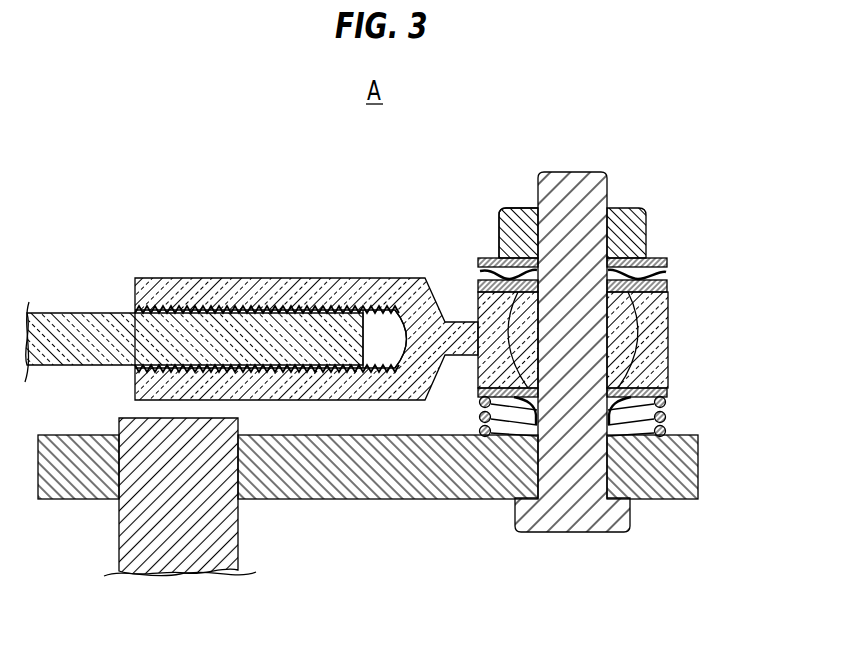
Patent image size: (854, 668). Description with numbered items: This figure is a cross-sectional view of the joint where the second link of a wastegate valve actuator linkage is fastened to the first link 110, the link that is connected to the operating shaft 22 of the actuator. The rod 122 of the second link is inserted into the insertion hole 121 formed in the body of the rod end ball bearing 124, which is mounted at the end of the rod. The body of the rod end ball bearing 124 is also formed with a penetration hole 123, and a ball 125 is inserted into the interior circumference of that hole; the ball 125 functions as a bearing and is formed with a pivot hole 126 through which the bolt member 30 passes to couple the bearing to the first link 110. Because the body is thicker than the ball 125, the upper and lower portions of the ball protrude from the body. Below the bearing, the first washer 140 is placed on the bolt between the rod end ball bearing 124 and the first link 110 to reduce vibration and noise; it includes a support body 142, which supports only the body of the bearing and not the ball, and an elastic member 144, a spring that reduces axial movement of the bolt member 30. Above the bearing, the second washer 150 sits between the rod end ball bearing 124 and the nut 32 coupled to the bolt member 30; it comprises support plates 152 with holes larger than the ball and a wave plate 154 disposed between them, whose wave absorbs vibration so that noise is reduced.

The operating shaft 22 is at (210, 525).
The bolt member 30 is at (572, 525).
The nut 32 is at (628, 222).
The first link 110 is at (388, 500).
The insertion hole 121 is at (382, 346).
The rod 122 is at (77, 312).
The penetration hole 123 is at (507, 337).
The rod end ball bearing 124 is at (212, 288).
The ball 125 is at (470, 285).
The pivot hole 126 is at (505, 212).
The first washer 140 is at (472, 420).
The support body 142 is at (530, 413).
The elastic member 144 is at (670, 440).
The second washer 150 is at (678, 262).
The support plate 152 is at (480, 272).
The wave plate 154 is at (670, 272).